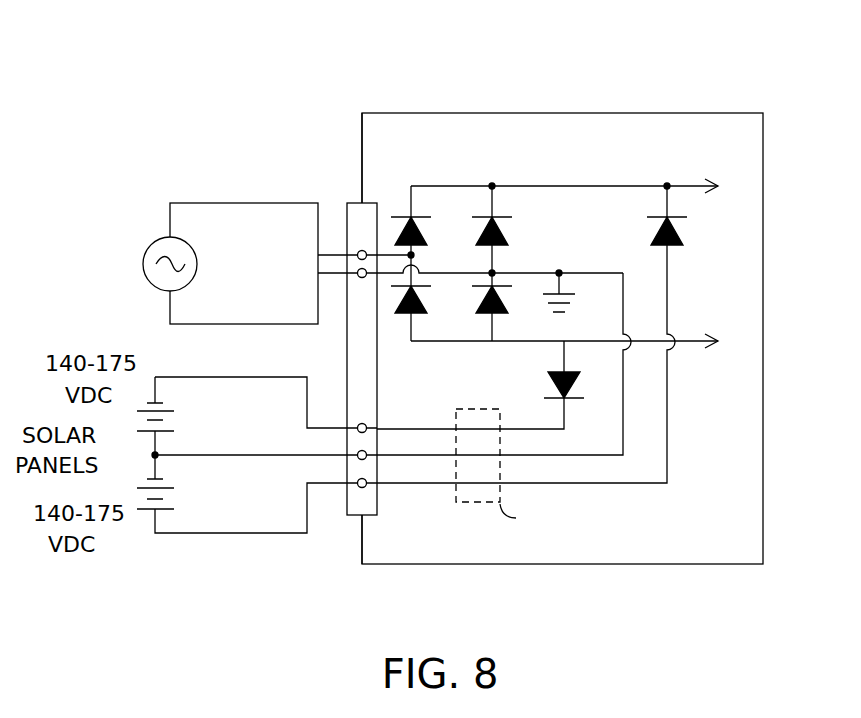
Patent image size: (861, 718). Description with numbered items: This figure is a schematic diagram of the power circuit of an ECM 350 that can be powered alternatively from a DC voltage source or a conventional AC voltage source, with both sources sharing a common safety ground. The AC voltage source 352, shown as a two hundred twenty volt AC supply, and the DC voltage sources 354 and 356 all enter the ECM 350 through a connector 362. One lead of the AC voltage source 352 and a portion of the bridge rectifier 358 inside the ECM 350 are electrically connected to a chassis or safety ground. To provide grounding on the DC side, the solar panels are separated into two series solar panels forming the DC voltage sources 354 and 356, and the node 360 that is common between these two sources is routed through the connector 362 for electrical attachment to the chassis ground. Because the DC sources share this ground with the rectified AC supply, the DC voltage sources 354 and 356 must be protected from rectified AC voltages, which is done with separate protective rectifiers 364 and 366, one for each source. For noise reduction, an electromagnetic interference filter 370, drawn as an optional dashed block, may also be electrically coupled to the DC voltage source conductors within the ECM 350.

The ECM 350 is at (763, 265).
The AC voltage source 352 is at (147, 246).
The DC voltage source 354 is at (176, 418).
The DC voltage source 356 is at (176, 502).
The bridge rectifier 358 is at (494, 172).
The node 360 is at (157, 457).
The connector 362 is at (347, 358).
The protective rectifier 364 is at (681, 236).
The protective rectifier 366 is at (556, 388).
The electromagnetic interference filter 370 is at (468, 504).